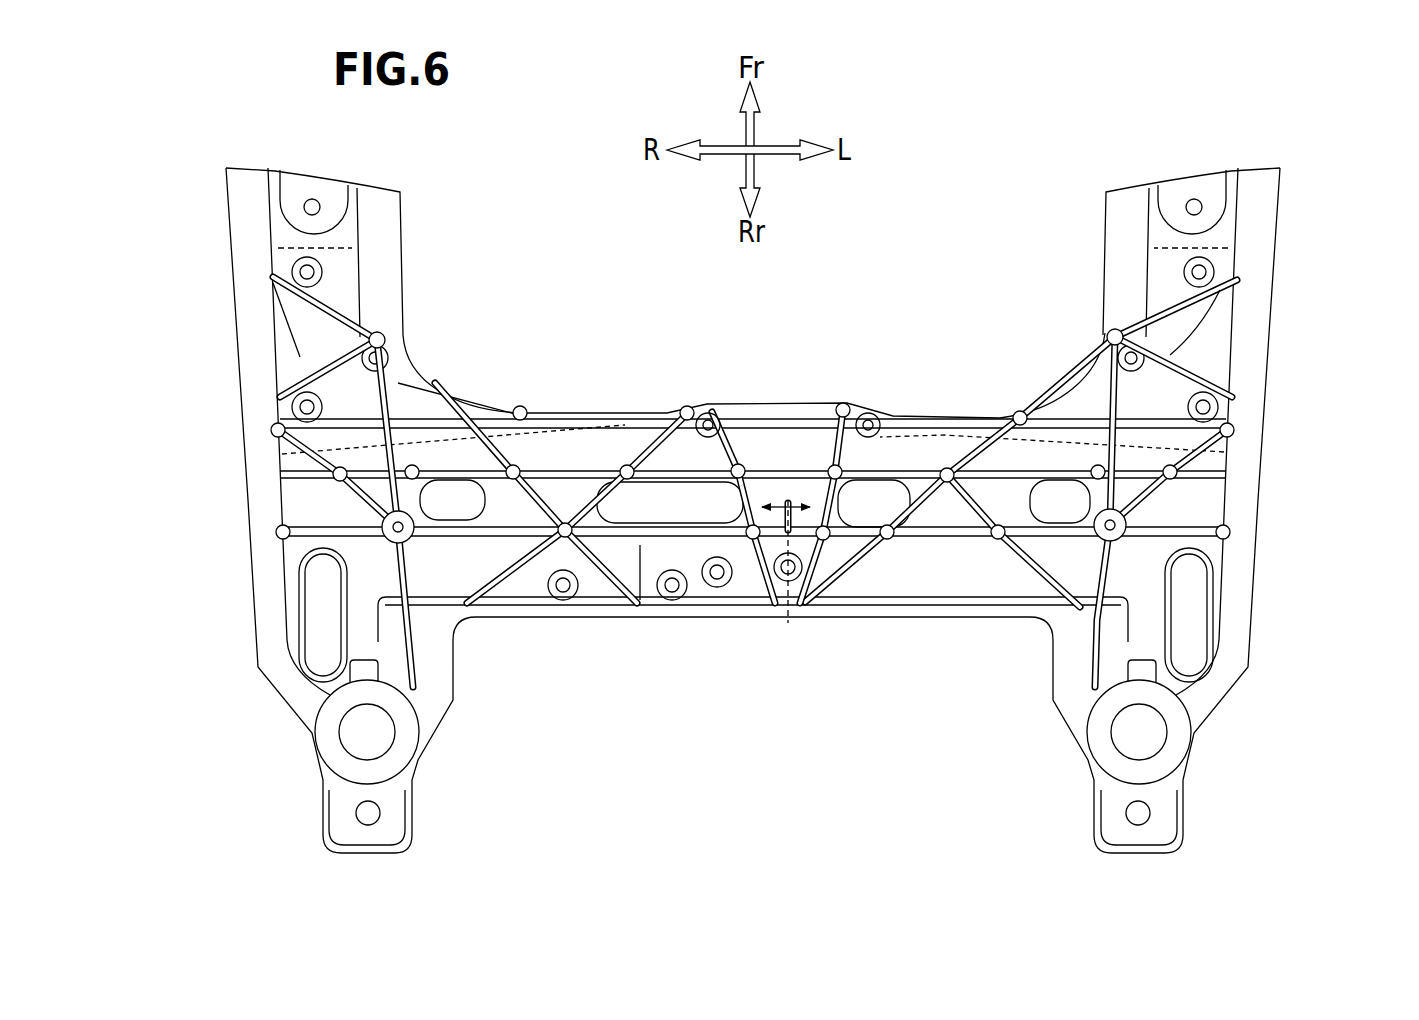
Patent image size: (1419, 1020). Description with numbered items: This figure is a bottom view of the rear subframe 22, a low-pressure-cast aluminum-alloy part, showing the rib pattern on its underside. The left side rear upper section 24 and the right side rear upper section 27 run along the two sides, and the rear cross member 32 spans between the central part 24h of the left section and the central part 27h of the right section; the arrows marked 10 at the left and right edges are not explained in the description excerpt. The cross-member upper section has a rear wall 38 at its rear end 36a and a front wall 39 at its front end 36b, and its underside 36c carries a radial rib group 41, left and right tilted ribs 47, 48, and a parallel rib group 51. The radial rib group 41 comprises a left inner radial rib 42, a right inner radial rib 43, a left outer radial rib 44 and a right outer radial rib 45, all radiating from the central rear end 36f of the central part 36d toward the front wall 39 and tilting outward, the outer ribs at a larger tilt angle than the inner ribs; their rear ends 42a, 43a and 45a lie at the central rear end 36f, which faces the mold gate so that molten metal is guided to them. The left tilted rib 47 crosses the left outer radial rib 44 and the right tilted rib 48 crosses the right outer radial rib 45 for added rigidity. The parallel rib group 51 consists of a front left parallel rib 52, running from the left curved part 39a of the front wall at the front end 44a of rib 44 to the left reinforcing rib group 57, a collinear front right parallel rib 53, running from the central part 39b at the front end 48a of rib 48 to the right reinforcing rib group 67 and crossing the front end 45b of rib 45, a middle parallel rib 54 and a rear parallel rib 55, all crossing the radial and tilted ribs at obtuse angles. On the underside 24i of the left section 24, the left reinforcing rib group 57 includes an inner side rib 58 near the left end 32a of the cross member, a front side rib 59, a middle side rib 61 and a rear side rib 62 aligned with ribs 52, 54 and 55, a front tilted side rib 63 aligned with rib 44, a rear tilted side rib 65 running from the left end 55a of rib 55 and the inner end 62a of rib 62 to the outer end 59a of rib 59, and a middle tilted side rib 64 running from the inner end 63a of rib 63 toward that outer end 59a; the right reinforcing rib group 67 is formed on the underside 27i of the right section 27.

The subframe 10 is at (139, 428).
The rear subframe 22 is at (218, 213).
The left side rear upper section 24 is at (1258, 572).
The central part 24h is at (1252, 473).
The underside 24i is at (1237, 347).
The right side rear upper section 27 is at (255, 580).
The central part 27h is at (257, 490).
The underside 27i is at (300, 355).
The rear cross member 32 is at (903, 622).
The left end 32a is at (1130, 505).
The rear end 36a is at (650, 620).
The front end 36b is at (765, 402).
The underside 36c is at (563, 458).
The central part 36d is at (787, 492).
The central rear end 36f is at (690, 620).
The rear wall 38 is at (660, 618).
The front wall 39 is at (832, 402).
The left curved part 39a is at (1028, 410).
The central part 39b is at (703, 410).
The radial rib group 41 is at (900, 430).
The left inner radial rib 42 is at (840, 507).
The rear end 42a is at (790, 625).
The right inner radial rib 43 is at (735, 501).
The rear end 43a is at (768, 620).
The left outer radial rib 44 is at (920, 508).
The front end 44a is at (1127, 447).
The right outer radial rib 45 is at (528, 498).
The rear end 45a is at (590, 600).
The front end 45b is at (470, 400).
The left tilted rib 47 is at (1032, 575).
The right tilted rib 48 is at (520, 567).
The front end 48a is at (695, 420).
The parallel rib group 51 is at (992, 453).
The front left parallel rib 52 is at (1105, 432).
The front right parallel rib 53 is at (440, 420).
The middle parallel rib 54 is at (655, 468).
The rear parallel rib 55 is at (603, 515).
The left end 55a is at (1093, 533).
The left reinforcing rib group 57 is at (1150, 290).
The inner side rib 58 is at (402, 562).
The front side rib 59 is at (328, 417).
The outer end 59a is at (1233, 410).
The middle side rib 61 is at (312, 480).
The rear side rib 62 is at (318, 550).
The inner end 62a is at (1127, 535).
The front tilted side rib 63 is at (320, 293).
The inner end 63a is at (1150, 298).
The middle tilted side rib 64 is at (316, 364).
The rear tilted side rib 65 is at (275, 447).
The right reinforcing rib group 67 is at (352, 300).